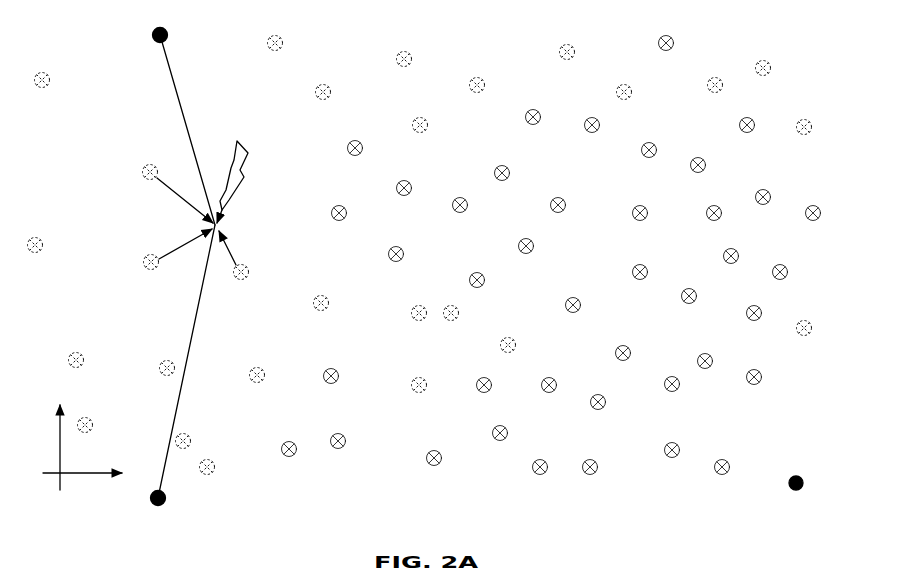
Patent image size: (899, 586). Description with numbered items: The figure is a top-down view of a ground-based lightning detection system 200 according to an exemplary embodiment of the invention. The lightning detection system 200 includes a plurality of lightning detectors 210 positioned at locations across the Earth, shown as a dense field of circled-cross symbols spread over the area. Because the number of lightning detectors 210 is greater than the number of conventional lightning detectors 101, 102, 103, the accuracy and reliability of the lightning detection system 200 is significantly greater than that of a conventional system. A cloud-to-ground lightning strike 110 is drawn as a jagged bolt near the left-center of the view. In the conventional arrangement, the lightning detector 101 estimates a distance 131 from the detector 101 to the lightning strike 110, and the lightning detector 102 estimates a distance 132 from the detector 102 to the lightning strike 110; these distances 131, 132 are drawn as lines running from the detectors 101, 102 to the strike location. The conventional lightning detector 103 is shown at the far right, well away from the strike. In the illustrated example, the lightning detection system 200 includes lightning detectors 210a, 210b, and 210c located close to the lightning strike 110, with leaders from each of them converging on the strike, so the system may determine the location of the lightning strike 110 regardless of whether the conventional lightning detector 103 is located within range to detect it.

The lightning detection system 200 is at (50, 30).
The lightning detector 101 is at (184, 39).
The lightning detector 102 is at (182, 498).
The lightning detector 103 is at (820, 484).
The lightning strike 110 is at (253, 182).
The distance 131 is at (192, 130).
The distance 132 is at (197, 361).
The lightning detectors 210 is at (424, 255).
The lightning detector 210a is at (151, 192).
The lightning detector 210b is at (150, 250).
The lightning detector 210c is at (262, 257).